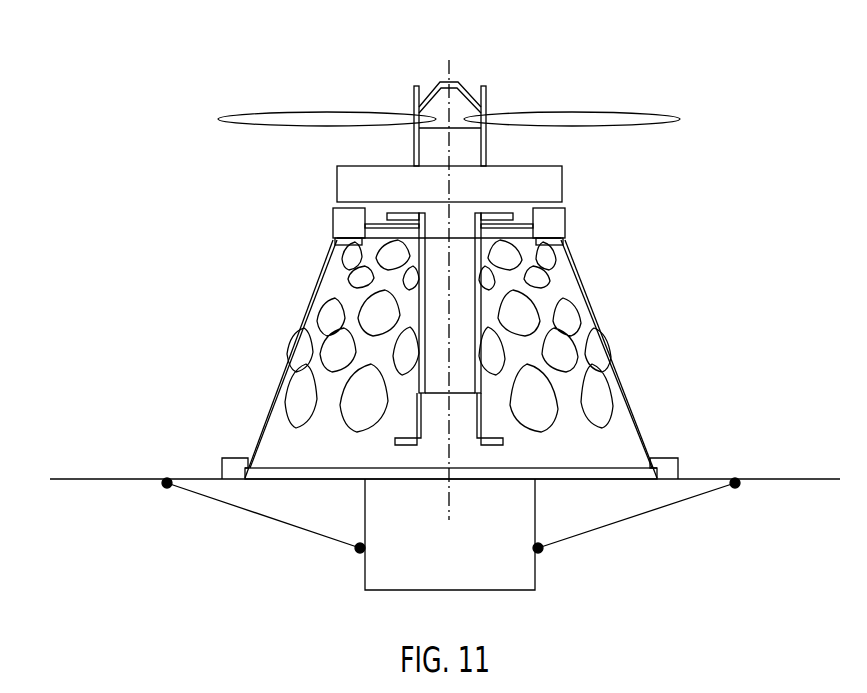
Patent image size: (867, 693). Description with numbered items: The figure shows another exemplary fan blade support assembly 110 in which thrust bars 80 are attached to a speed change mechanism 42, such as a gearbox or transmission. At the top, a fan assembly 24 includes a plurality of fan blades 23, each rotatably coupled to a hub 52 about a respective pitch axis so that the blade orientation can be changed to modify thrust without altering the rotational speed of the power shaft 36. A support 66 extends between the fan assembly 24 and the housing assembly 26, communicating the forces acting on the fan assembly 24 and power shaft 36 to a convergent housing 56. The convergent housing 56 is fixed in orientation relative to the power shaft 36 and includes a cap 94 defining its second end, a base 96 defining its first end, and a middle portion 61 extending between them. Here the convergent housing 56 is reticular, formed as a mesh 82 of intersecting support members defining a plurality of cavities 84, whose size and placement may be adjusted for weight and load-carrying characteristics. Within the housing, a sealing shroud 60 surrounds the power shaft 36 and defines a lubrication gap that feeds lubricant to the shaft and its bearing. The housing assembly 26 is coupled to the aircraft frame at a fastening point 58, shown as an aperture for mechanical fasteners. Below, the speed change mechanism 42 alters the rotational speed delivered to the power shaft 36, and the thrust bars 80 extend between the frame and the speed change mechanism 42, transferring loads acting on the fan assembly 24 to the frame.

The fan blade support assembly 110 is at (108, 127).
The fan assembly 24 is at (465, 58).
The hub 52 is at (432, 86).
The fan blades 23 is at (270, 113).
The support 66 is at (548, 166).
The cap 94 is at (565, 222).
The sealing shroud 60 is at (420, 352).
The power shaft 36 is at (437, 321).
The cavities 84 is at (565, 312).
The convergent housing 56 is at (622, 387).
The mesh 82 is at (633, 427).
The housing assembly 26 is at (90, 325).
The middle portion 61 is at (215, 345).
The fastening point 58 is at (688, 460).
The base 96 is at (262, 468).
The thrust bars 80 is at (270, 520).
The speed change mechanism 42 is at (505, 592).